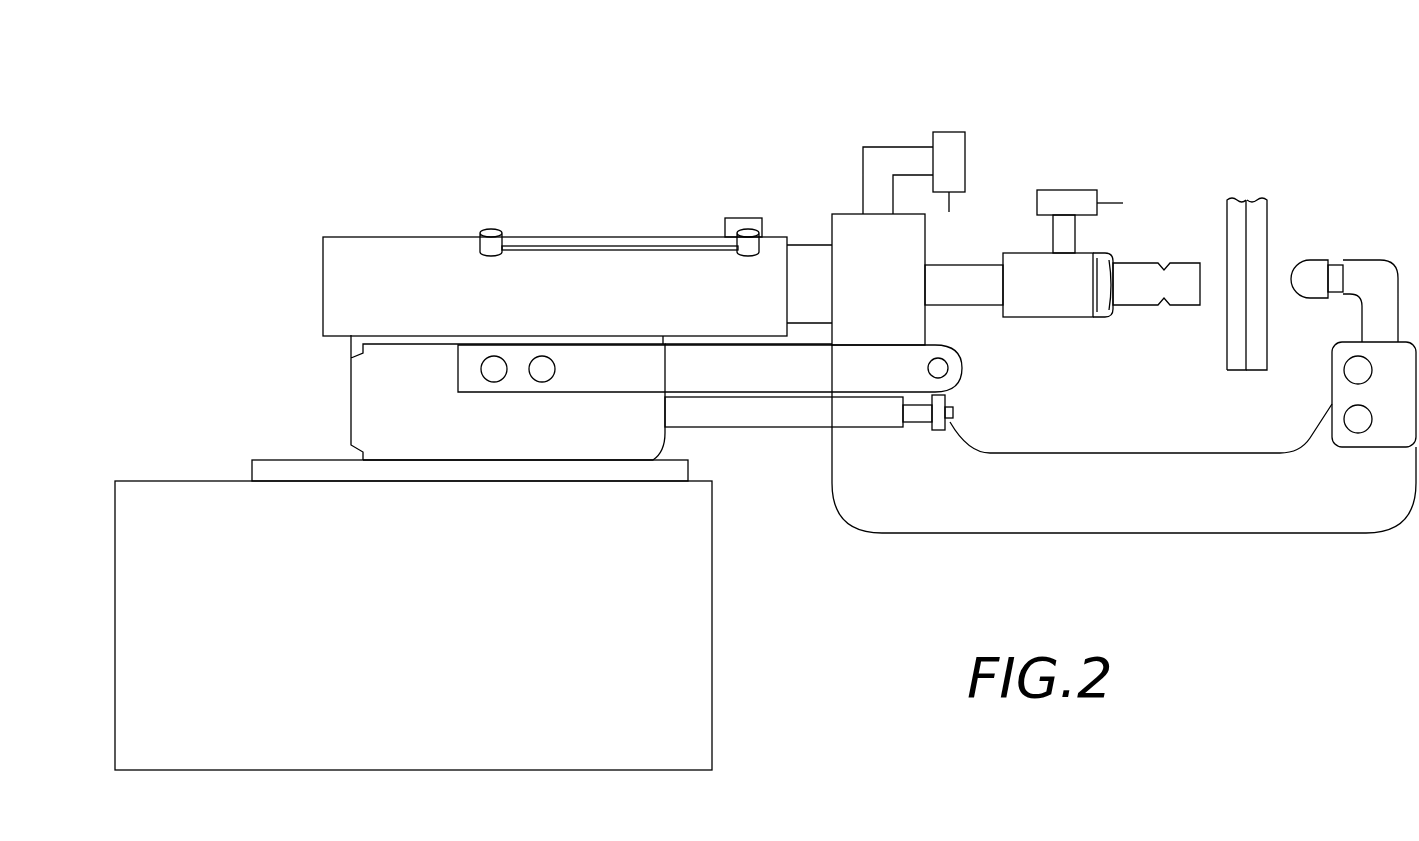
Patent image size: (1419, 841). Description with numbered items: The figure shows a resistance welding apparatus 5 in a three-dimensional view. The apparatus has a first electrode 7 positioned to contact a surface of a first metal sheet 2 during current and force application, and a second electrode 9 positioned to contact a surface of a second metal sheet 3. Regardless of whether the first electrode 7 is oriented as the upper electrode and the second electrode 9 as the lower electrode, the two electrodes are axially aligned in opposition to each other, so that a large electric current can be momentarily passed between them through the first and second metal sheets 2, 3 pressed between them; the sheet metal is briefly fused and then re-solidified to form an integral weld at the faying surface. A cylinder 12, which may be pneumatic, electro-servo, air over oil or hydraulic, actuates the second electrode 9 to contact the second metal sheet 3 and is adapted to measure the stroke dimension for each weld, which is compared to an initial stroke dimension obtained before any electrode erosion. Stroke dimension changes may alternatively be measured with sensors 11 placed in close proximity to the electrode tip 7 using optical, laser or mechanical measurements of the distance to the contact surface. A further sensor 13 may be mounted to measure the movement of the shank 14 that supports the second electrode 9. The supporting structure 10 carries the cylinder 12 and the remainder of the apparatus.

The first metal sheet 2 is at (1235, 207).
The second metal sheet 3 is at (1257, 202).
The resistance welding apparatus 5 is at (808, 125).
The first electrode 7 is at (1178, 268).
The second electrode 9 is at (1312, 273).
The mounting body 10 is at (512, 436).
The sensors 11 is at (1068, 168).
The cylinder 12 is at (578, 308).
The sensor 13 is at (948, 130).
The shank 14 is at (1125, 492).